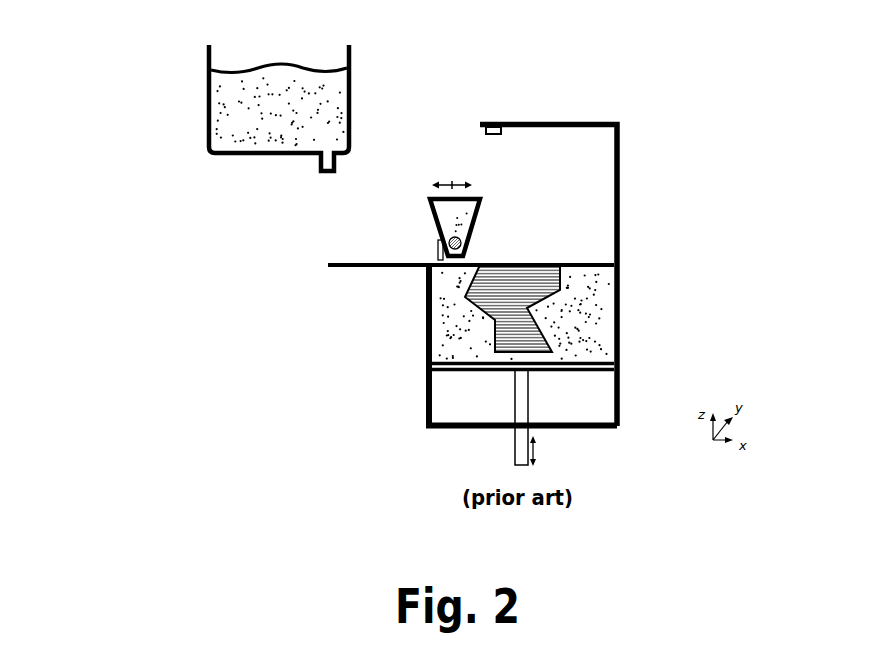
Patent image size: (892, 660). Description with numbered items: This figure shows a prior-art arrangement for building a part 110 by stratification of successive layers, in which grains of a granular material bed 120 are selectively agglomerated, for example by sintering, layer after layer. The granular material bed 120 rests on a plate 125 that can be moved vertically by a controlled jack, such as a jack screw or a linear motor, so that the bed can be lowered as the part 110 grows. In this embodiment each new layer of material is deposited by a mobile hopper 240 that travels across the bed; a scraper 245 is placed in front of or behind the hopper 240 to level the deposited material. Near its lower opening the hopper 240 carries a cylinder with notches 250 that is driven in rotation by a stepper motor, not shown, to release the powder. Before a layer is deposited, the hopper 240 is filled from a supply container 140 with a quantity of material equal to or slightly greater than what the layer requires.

The part 110 is at (477, 307).
The granular material bed 120 is at (590, 300).
The plate 125 is at (572, 372).
The powder container 140 is at (207, 101).
The mobile hopper 240 is at (433, 209).
The scraper 245 is at (438, 247).
The cylinder with notches 250 is at (477, 233).